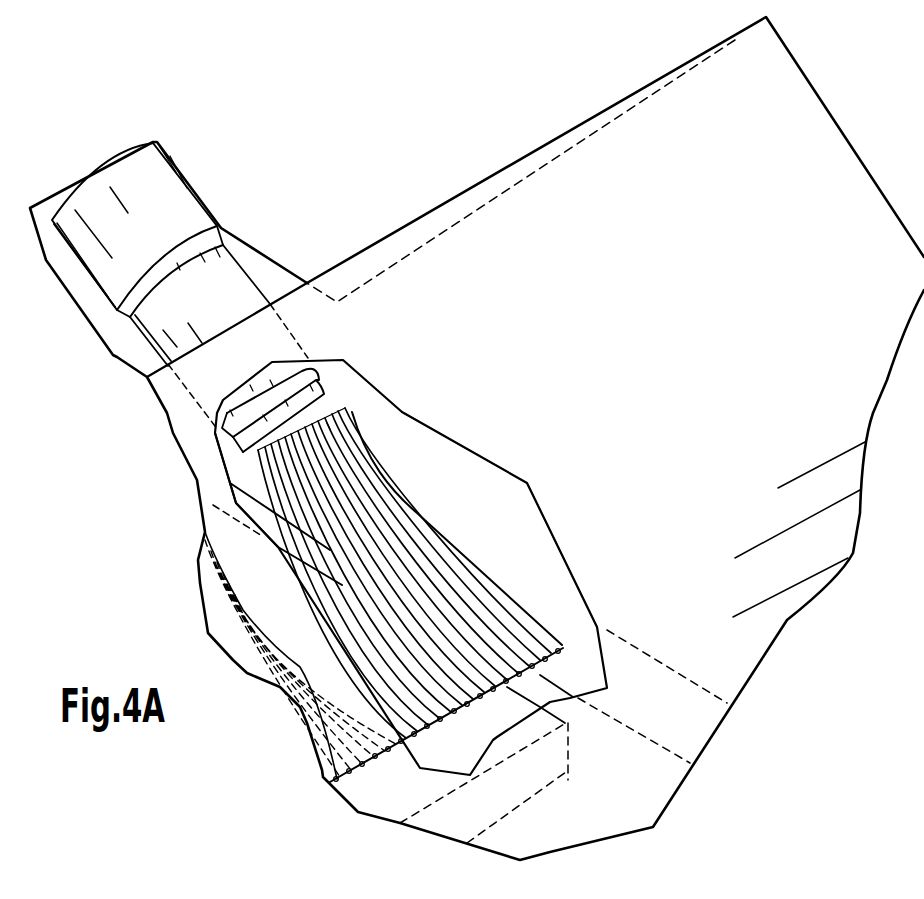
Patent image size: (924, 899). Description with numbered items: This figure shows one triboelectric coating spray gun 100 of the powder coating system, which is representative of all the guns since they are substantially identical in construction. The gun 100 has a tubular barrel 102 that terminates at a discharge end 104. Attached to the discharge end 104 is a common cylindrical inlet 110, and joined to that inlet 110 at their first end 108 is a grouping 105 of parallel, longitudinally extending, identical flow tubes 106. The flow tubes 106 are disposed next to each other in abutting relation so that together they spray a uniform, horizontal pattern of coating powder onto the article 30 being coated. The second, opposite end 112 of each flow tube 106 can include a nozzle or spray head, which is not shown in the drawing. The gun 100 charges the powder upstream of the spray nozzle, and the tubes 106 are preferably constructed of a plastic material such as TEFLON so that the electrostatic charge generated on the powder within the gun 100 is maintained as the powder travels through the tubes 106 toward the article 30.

The article 30 is at (542, 770).
The spray gun 100 is at (160, 200).
The tubular barrel 102 is at (281, 372).
The discharge end 104 is at (263, 425).
The grouping of flow tubes 105 is at (474, 516).
The flow tube 106 is at (548, 637).
The first end 108 is at (308, 423).
The common cylindrical inlet 110 is at (256, 426).
The second end 112 is at (568, 648).